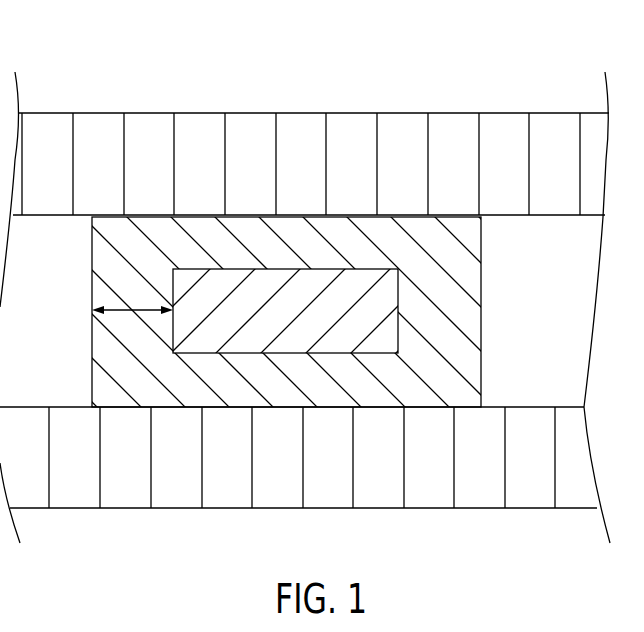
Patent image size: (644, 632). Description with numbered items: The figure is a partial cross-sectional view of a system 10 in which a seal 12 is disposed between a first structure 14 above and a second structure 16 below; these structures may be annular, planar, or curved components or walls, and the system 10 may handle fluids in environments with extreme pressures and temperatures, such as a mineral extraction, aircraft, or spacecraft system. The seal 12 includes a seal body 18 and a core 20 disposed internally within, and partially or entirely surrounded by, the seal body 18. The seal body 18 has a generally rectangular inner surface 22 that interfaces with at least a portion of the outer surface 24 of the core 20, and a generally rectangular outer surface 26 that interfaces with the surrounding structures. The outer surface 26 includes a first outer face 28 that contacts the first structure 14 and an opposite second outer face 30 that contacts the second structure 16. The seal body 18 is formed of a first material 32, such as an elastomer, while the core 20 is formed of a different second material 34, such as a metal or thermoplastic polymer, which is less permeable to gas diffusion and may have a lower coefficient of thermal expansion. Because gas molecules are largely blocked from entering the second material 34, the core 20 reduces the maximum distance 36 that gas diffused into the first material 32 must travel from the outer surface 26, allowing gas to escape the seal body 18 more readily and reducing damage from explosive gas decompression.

The system 10 is at (88, 53).
The seal 12 is at (508, 317).
The first structure 14 is at (397, 130).
The second structure 16 is at (432, 490).
The seal body 18 is at (448, 242).
The core 20 is at (215, 333).
The inner surface 22 is at (238, 270).
The outer surface of the core 24 is at (282, 268).
The outer surface 26 is at (240, 215).
The first outer face 28 is at (295, 215).
The second outer face 30 is at (265, 408).
The first material 32 is at (372, 387).
The second material 34 is at (367, 317).
The maximum distance 36 is at (122, 310).